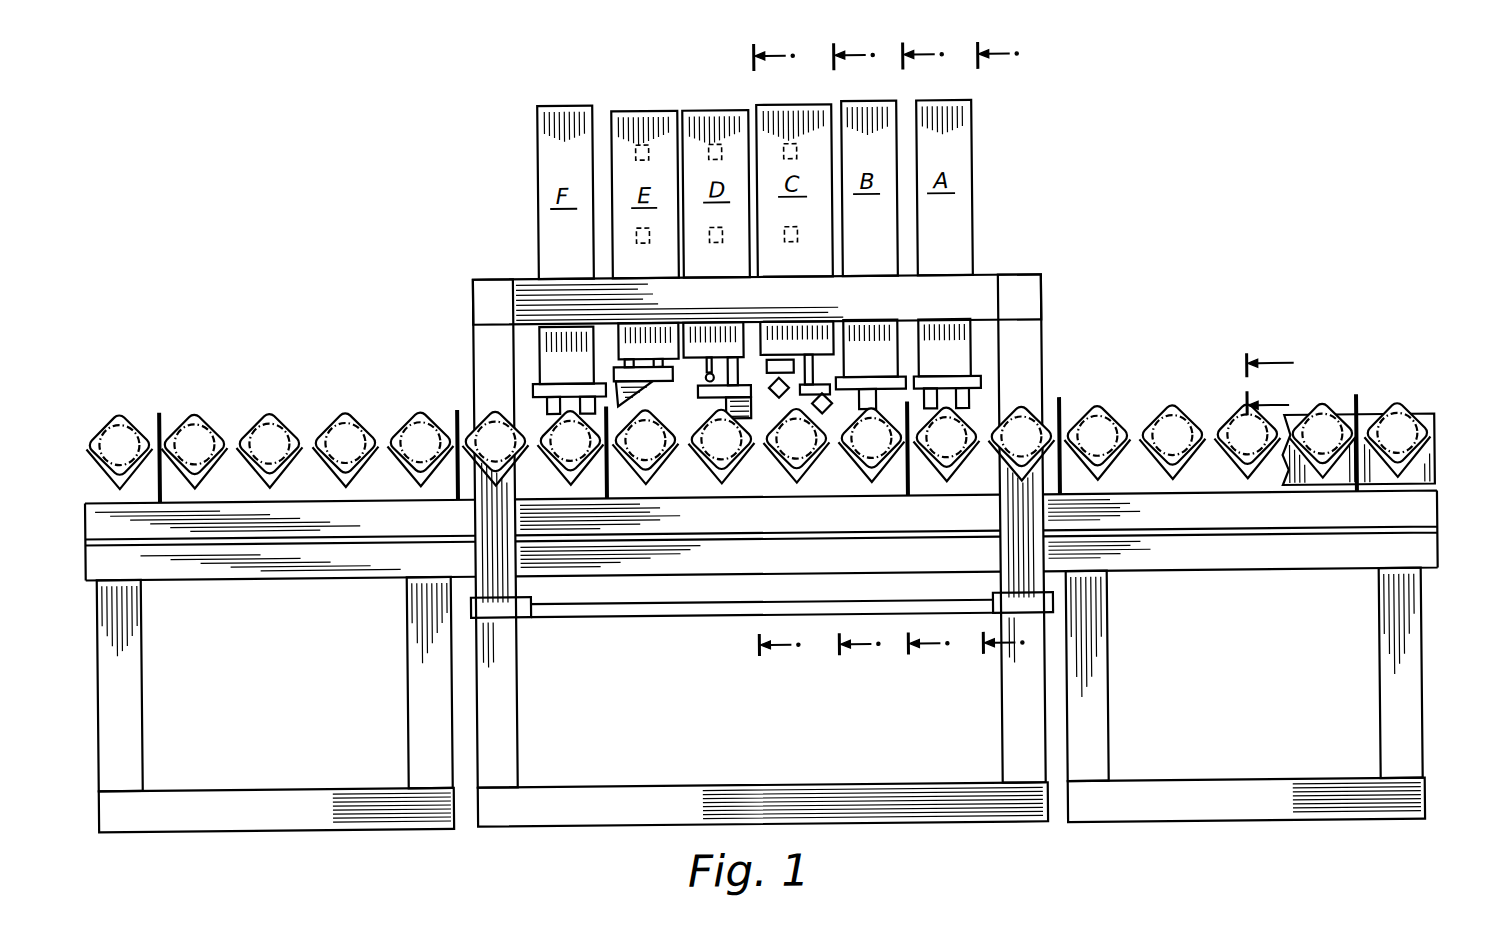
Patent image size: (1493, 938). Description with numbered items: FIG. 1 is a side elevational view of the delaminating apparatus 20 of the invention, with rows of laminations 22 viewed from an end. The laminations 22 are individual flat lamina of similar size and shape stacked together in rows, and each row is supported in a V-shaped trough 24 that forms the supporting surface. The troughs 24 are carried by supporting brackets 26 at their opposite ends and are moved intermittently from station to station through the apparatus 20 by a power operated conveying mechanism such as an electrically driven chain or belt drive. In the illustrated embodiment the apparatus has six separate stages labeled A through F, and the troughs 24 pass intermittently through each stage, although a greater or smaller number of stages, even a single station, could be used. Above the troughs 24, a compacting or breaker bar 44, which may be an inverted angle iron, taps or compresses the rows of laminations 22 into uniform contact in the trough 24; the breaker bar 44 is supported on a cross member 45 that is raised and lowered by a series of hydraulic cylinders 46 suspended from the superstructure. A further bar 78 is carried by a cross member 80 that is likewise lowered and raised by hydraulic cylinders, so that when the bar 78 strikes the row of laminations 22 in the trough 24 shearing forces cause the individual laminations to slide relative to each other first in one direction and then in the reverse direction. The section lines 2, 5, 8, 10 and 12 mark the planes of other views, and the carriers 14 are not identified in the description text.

The section line 2- 2 is at (1001, 349).
The section line 5- 5 is at (925, 350).
The section line 8- 8 is at (856, 352).
The section line 10- 10 is at (779, 354).
The section line 12- 12 is at (1284, 377).
The container carrier 14 is at (413, 476).
The apparatus 20 is at (1097, 255).
The laminations 22 is at (1163, 406).
The V-shaped troughs 24 is at (1236, 473).
The supporting brackets 26 is at (928, 481).
The breaker bar 44 is at (950, 380).
The cross member 45 is at (950, 323).
The hydraulic cylinders 46 is at (935, 225).
The breaker bar 78 is at (878, 380).
The cross member 80 is at (880, 323).